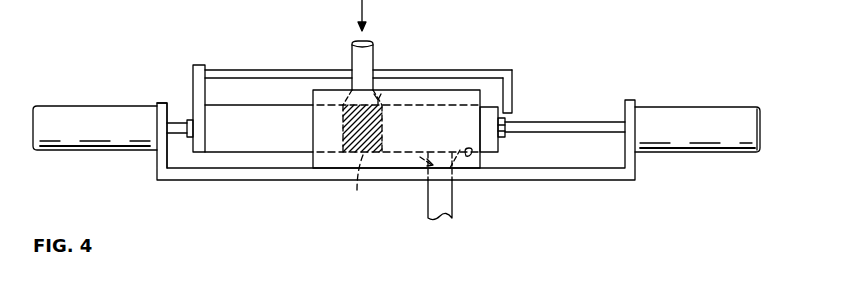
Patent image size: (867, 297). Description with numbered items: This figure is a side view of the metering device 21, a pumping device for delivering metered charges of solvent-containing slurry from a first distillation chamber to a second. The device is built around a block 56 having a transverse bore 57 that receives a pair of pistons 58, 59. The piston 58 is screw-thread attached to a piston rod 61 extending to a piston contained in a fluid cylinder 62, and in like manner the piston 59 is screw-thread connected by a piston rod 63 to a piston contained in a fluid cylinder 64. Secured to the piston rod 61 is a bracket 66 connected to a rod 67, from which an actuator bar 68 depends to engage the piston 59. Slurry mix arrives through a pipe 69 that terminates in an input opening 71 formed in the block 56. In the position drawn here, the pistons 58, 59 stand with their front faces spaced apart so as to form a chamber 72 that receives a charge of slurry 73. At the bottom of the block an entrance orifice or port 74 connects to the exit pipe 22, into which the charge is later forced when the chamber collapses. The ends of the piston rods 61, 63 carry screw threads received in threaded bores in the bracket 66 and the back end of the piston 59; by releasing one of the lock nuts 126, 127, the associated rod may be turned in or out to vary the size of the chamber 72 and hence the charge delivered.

The metering device 21 is at (513, 55).
The exit pipe 22 is at (452, 208).
The block 56 is at (447, 95).
The transverse bore 57 is at (468, 158).
The piston 58 is at (243, 148).
The piston 59 is at (498, 143).
The piston rod 61 is at (177, 120).
The fluid cylinder 62 is at (97, 152).
The piston rod 63 is at (568, 122).
The fluid cylinder 64 is at (696, 107).
The bracket 66 is at (197, 65).
The rod 67 is at (255, 70).
The actuator bar 68 is at (512, 88).
The pipe 69 is at (352, 50).
The input opening 71 is at (383, 92).
The chamber 72 is at (360, 192).
The charge of slurry 73 is at (350, 143).
The entrance orifice or port 74 is at (431, 170).
The lock nut 126 is at (188, 118).
The lock nut 127 is at (502, 122).